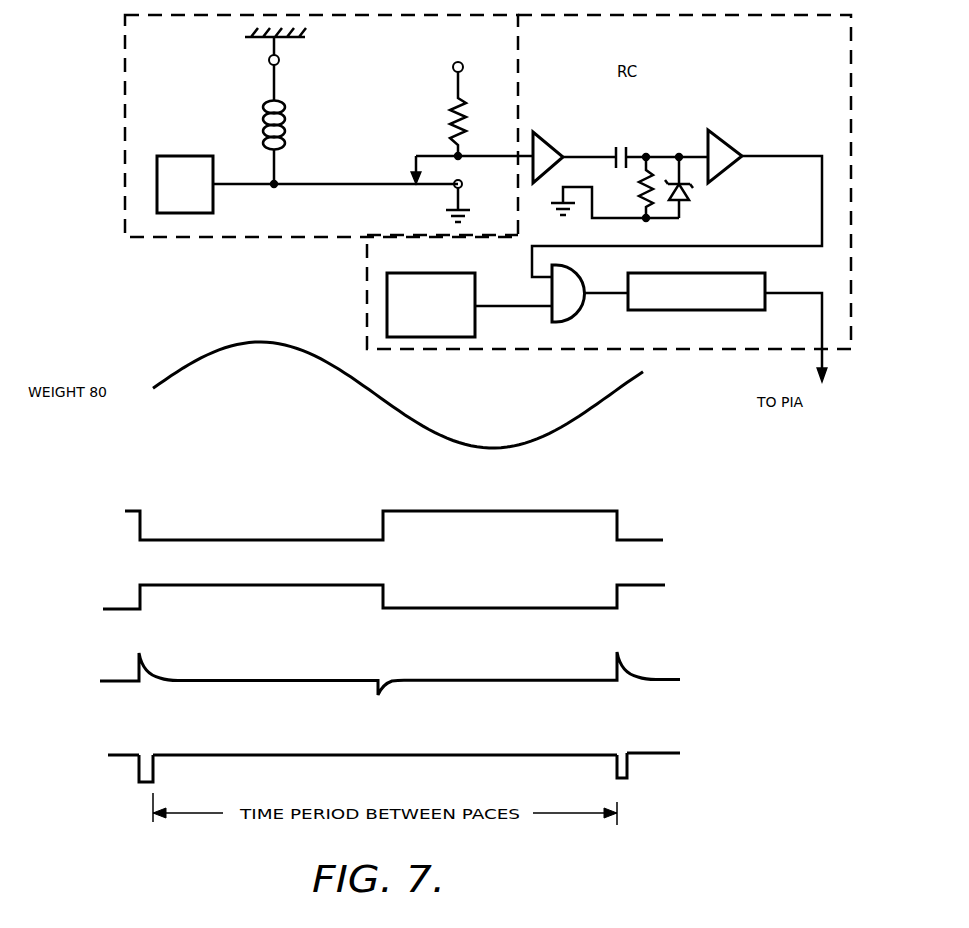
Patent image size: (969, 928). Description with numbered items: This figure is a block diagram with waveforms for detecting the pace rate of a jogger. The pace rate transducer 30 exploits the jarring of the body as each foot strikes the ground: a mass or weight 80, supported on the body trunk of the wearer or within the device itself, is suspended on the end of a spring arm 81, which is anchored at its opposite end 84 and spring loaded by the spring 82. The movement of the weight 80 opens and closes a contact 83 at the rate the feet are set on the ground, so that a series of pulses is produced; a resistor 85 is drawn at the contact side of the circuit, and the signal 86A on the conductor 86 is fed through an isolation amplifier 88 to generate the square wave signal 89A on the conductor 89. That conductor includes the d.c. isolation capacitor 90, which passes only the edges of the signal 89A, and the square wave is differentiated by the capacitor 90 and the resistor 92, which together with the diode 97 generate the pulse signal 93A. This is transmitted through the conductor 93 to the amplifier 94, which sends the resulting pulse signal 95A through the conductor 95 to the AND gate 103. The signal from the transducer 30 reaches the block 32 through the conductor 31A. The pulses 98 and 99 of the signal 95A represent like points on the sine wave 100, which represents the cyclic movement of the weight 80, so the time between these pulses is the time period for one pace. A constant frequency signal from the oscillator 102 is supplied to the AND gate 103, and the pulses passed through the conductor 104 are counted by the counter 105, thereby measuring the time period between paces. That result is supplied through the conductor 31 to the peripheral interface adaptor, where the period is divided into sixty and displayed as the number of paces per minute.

The pace rate transducer 30 is at (122, 113).
The weight 80 is at (175, 156).
The spring arm 81 is at (262, 187).
The spring 82 is at (287, 127).
The contact 83 is at (412, 173).
The anchored end 84 is at (450, 198).
The pull-up resistor 85 is at (462, 102).
The conductor 86 is at (513, 153).
The isolation amplifier 88 is at (550, 138).
The conductor 89 is at (588, 152).
The d.c. isolation capacitor 90 is at (627, 150).
The resistor 92 is at (640, 188).
The conductor 93 is at (680, 153).
The amplifier 94 is at (733, 163).
The conductor 95 is at (753, 153).
The diode 97 is at (692, 194).
The conductor 31A is at (519, 125).
The block 32 is at (852, 110).
The oscillator 102 is at (447, 273).
The AND gate 103 is at (577, 310).
The conductor 104 is at (607, 294).
The counter 105 is at (732, 310).
The conductor 31 is at (778, 293).
The sine wave 100 is at (613, 407).
The signal 86A is at (200, 539).
The signal 89A is at (232, 585).
The pulse signal 93A is at (255, 680).
The pulse signal 95A is at (277, 755).
The pulse 98 is at (157, 770).
The pulse 99 is at (615, 763).